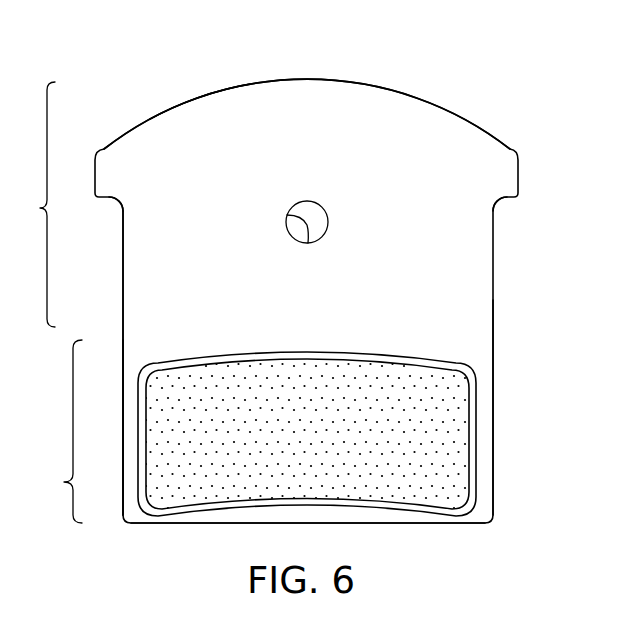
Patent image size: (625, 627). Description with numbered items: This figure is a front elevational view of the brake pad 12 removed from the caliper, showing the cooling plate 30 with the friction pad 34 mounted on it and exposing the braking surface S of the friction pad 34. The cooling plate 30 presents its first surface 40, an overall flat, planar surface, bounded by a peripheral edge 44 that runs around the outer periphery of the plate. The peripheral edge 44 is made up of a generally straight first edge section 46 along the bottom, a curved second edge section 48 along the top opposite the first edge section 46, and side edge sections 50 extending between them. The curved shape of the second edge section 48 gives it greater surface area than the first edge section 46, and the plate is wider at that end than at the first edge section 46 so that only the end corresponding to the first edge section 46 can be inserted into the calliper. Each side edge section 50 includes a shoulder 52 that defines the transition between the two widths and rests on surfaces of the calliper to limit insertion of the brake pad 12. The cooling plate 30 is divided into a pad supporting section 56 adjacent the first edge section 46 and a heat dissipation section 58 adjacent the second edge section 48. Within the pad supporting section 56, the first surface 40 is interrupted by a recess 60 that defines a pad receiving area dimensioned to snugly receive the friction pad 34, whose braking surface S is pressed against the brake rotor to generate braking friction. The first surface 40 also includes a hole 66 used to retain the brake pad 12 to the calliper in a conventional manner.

The brake pad 12 is at (505, 80).
The cooling plate 30 is at (450, 297).
The friction pad 34 is at (427, 465).
The first surface 40 is at (153, 309).
The peripheral edge 44 is at (395, 88).
The first edge section 46 is at (403, 524).
The second edge section 48 is at (211, 92).
The side edge sections 50 is at (493, 342).
The shoulder 52 is at (113, 200).
The pad supporting section 56 is at (55, 431).
The heat dissipation section 58 is at (31, 204).
The recess 60 is at (472, 431).
The hole 66 is at (308, 243).
The braking surface S is at (253, 403).